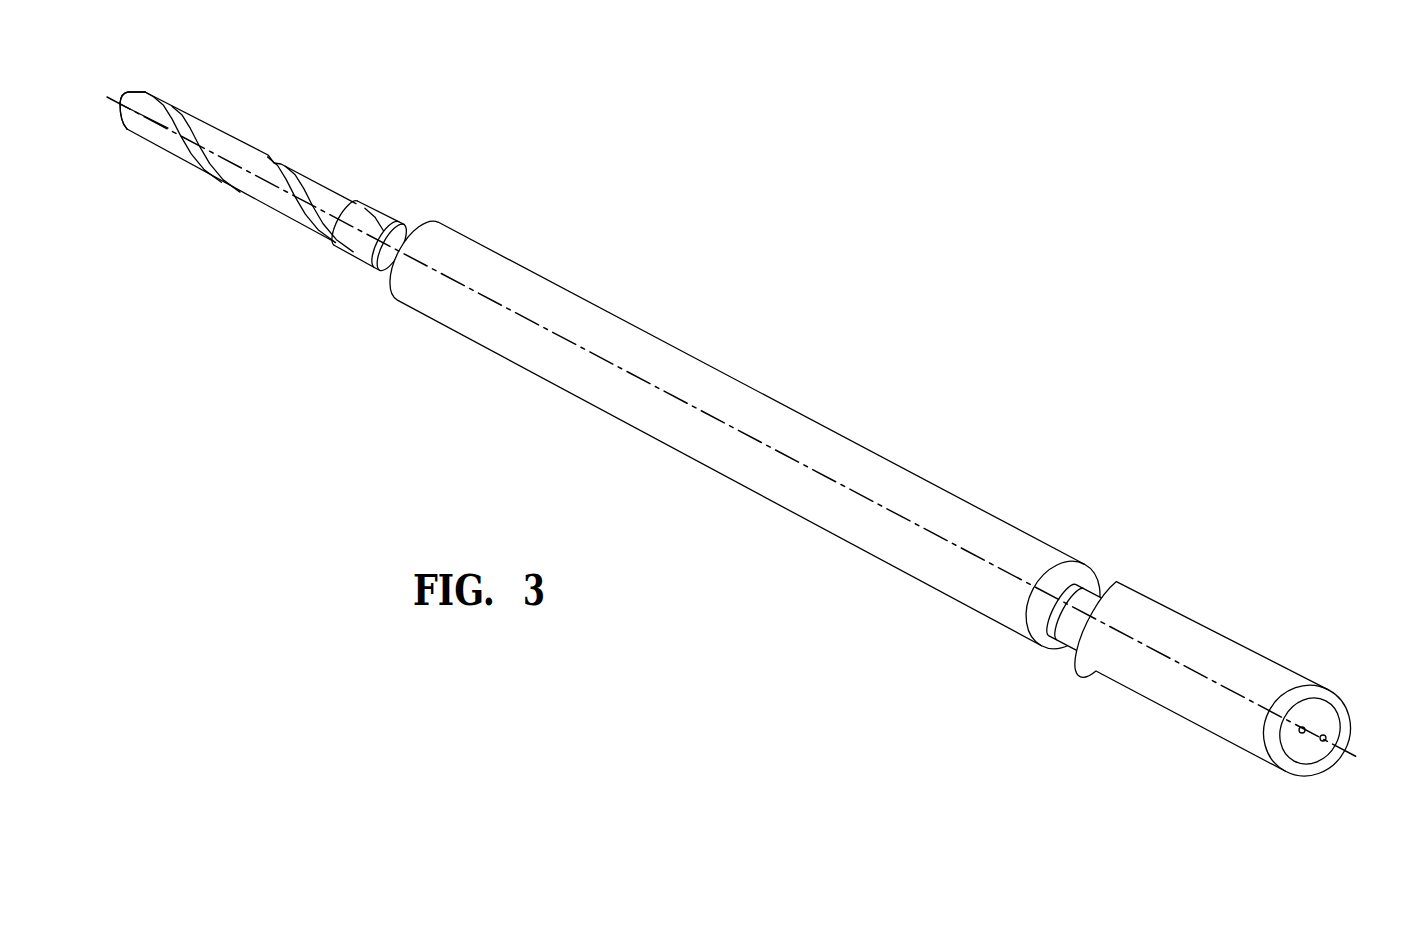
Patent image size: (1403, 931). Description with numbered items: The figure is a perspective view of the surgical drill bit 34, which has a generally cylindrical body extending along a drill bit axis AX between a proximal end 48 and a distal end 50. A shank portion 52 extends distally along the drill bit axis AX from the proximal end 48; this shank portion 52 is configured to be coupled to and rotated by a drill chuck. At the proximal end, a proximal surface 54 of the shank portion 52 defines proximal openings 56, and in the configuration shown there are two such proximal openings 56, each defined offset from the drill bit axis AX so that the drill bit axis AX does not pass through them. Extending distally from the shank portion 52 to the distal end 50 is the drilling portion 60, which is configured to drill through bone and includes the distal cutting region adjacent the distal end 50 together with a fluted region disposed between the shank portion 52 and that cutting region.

The surgical drill bit 34 is at (764, 300).
The drilling portion 60 is at (161, 62).
The distal end 50 is at (120, 104).
The shank portion 52 is at (1338, 692).
The proximal end 48 is at (1333, 716).
The proximal surface 54 is at (1293, 742).
The proximal opening 56 is at (1326, 738).
The drill bit axis AX is at (749, 440).